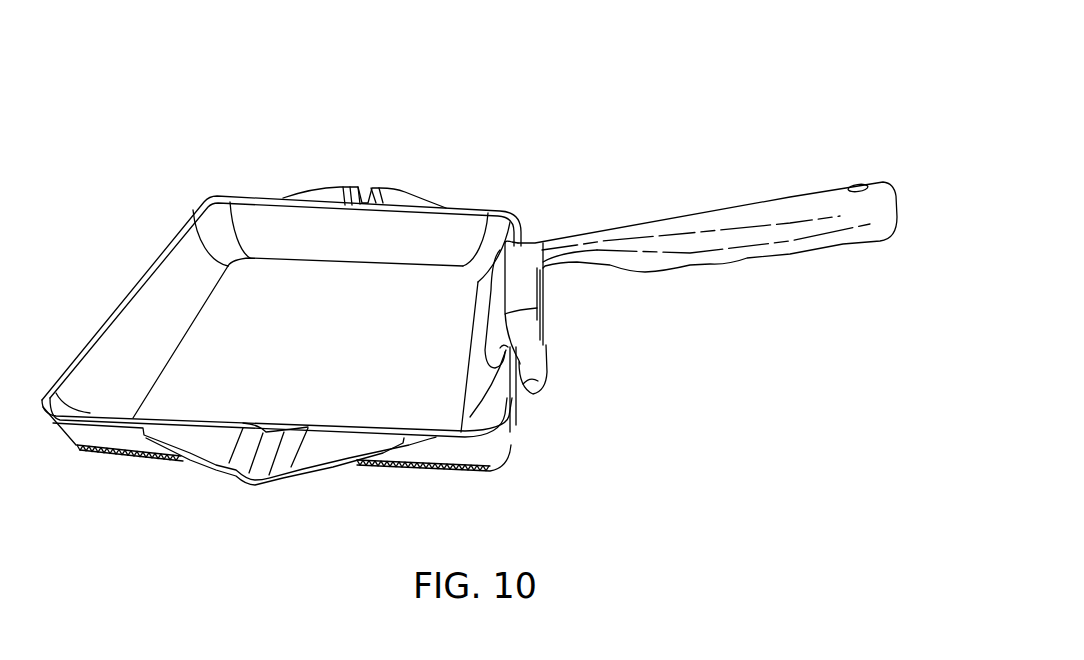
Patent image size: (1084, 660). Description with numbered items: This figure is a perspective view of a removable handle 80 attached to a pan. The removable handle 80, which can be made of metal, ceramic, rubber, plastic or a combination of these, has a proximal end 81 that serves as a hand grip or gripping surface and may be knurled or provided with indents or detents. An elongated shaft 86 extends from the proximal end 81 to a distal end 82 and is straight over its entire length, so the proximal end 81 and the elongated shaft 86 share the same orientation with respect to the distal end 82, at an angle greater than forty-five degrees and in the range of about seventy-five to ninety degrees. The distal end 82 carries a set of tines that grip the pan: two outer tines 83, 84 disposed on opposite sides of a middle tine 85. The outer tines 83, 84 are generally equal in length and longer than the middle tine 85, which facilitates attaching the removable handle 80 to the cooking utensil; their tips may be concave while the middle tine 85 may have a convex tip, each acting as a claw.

The removable handle 80 is at (768, 93).
The proximal end 81 is at (894, 193).
The distal end 82 is at (550, 274).
The outer tine 83 is at (543, 373).
The outer tine 84 is at (545, 333).
The middle tine 85 is at (516, 416).
The elongated shaft 86 is at (567, 241).